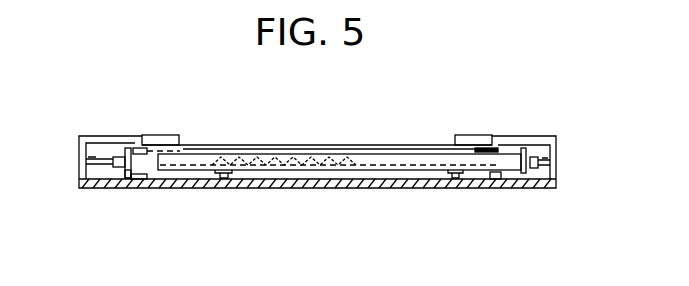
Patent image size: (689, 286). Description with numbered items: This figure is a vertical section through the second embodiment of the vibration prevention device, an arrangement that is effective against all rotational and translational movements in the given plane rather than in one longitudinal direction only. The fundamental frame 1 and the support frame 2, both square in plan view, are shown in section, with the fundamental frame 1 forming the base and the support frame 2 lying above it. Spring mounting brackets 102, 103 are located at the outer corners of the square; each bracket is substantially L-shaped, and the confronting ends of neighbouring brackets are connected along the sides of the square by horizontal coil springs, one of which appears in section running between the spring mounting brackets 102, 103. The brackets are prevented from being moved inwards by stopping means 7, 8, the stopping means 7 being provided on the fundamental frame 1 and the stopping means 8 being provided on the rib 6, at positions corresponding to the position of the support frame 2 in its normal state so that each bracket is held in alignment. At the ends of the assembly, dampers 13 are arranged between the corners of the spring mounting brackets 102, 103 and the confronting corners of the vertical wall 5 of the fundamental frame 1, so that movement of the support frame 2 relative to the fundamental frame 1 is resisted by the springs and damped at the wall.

The fundamental frame 1 is at (391, 190).
The support frame 2 is at (400, 150).
The vertical wall 5 is at (557, 153).
The rib 6 is at (167, 136).
The stopping means 7 is at (142, 180).
The stopping means 8 is at (137, 148).
The damper 13 is at (123, 152).
The spring mounting bracket 102 is at (524, 174).
The spring mounting bracket 103 is at (128, 178).